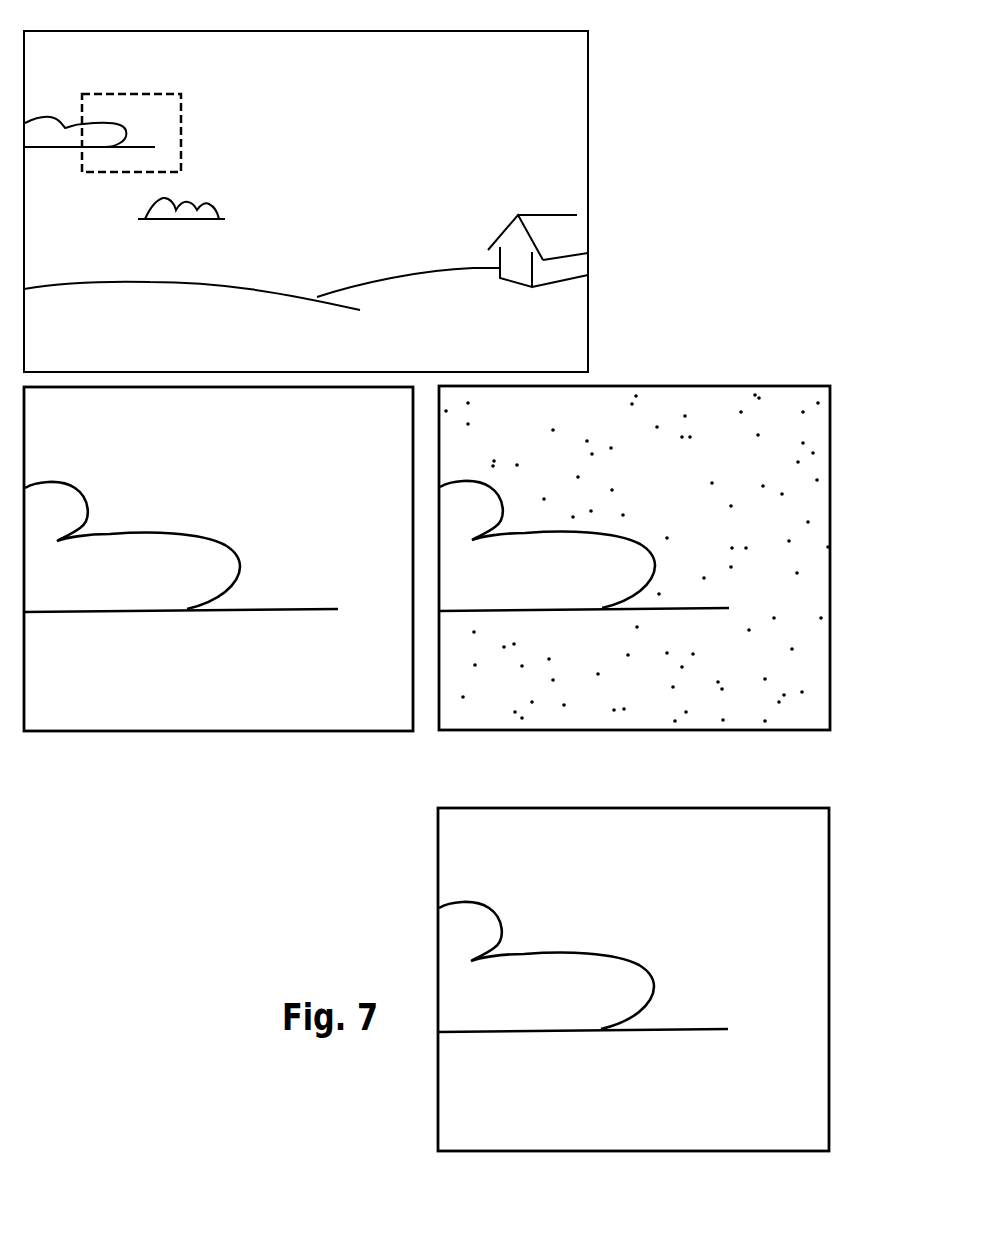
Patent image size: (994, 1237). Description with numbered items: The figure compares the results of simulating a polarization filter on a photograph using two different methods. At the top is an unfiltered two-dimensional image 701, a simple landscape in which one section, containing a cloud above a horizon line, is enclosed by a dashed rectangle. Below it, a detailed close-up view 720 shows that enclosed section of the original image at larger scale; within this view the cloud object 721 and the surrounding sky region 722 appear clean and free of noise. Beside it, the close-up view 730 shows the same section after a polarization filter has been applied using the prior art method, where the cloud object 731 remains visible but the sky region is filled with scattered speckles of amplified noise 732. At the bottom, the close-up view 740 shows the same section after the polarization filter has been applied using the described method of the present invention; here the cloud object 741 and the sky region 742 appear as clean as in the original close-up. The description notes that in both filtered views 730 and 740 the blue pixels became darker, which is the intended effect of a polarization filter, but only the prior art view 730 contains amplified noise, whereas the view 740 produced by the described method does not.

The unfiltered two-dimensional image 701 is at (343, 201).
The detailed close-up view 720 is at (220, 581).
The cloud object in zoomed original 721 is at (181, 547).
The background region of zoomed original 722 is at (332, 486).
The close-up view after prior art polarization filter 730 is at (634, 579).
The cloud object in prior art image 731 is at (584, 546).
The noise in prior art background 732 is at (637, 558).
The close-up view after polarization filter of present invention 740 is at (633, 1003).
The cloud object in processed image 741 is at (583, 967).
The background region of processed image 742 is at (707, 878).